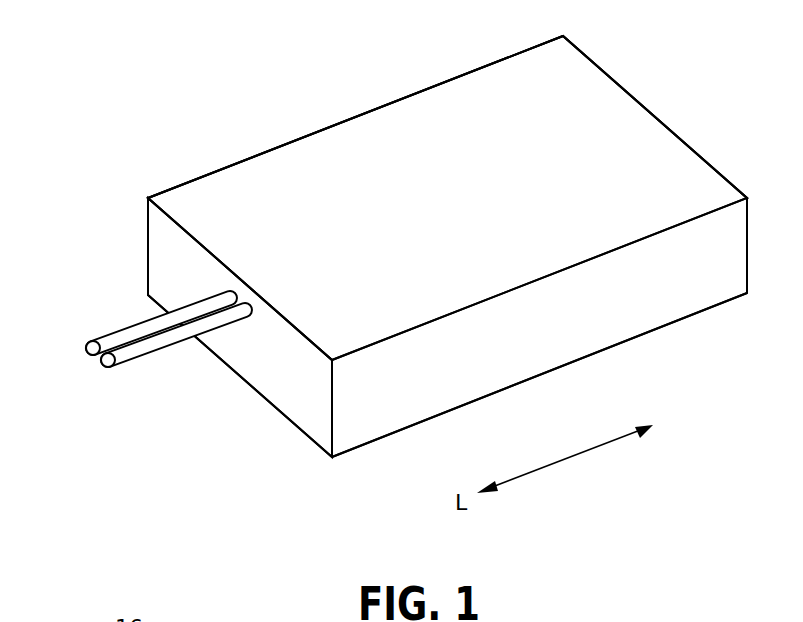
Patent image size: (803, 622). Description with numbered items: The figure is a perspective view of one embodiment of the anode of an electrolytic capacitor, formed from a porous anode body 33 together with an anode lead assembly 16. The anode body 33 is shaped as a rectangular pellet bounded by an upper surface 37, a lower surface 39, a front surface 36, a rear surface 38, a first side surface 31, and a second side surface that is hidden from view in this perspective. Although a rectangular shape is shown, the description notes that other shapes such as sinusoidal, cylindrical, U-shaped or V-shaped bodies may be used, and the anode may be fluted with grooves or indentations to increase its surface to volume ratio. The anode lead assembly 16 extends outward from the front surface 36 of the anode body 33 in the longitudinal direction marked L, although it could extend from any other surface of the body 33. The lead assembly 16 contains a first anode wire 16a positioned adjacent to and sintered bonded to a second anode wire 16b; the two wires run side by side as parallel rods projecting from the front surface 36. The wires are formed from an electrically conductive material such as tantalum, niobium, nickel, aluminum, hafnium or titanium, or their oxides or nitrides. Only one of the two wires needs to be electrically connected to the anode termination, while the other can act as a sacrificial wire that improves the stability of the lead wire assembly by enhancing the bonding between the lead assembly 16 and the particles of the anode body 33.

The anode lead assembly 16 is at (137, 375).
The first anode wire 16a is at (122, 337).
The second anode wire 16b is at (150, 345).
The first side surface 31 is at (544, 342).
The porous anode body 33 is at (340, 148).
The front surface 36 is at (295, 398).
The upper surface 37 is at (677, 185).
The rear surface 38 is at (627, 90).
The lower surface 39 is at (457, 408).